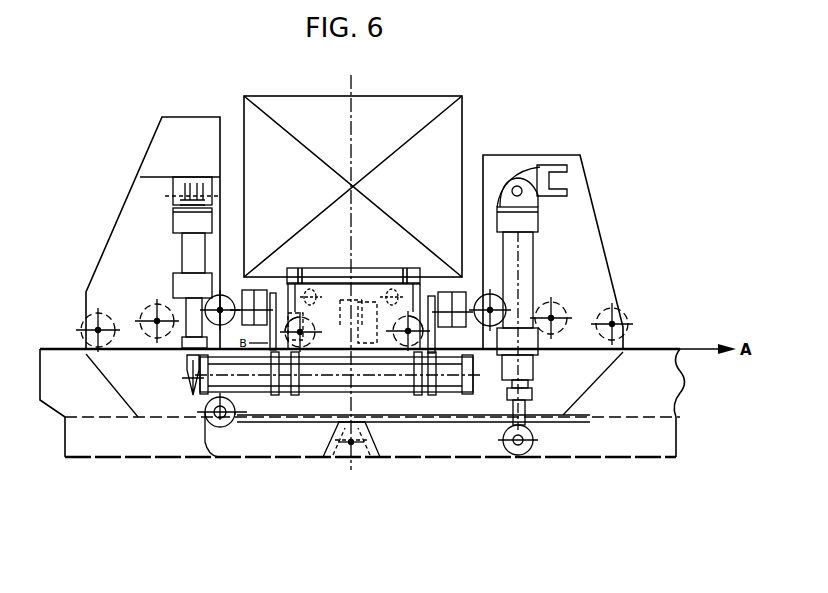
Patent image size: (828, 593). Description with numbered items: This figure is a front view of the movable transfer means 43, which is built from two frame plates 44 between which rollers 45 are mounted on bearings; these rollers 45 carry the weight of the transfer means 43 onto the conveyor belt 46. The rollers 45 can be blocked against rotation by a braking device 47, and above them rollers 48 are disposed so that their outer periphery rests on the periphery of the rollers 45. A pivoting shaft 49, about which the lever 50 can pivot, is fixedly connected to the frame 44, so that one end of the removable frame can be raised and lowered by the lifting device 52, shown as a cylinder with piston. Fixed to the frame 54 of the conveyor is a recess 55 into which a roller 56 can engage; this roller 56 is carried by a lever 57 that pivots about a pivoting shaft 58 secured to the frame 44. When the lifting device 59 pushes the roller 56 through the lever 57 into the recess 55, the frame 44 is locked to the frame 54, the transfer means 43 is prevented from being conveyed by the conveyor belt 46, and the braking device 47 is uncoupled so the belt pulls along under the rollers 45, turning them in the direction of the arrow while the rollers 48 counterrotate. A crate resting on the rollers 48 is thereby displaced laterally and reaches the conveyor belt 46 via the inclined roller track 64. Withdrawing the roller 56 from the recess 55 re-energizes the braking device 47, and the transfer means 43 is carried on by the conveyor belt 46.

The movable transfer means 43 is at (610, 199).
The frame plates 44 is at (196, 140).
The rollers 45 is at (291, 284).
The conveyor belt 46 is at (657, 349).
The braking device 47 is at (352, 292).
The rollers 48 is at (389, 292).
The pivoting shaft 49 is at (452, 368).
The lever 50 is at (296, 393).
The lifting device 52 is at (190, 261).
The frame 54 is at (637, 383).
The recess 55 is at (392, 456).
The roller 56 is at (343, 446).
The lever 57 is at (473, 427).
The pivoting shaft 58 is at (223, 417).
The lifting device 59 is at (522, 260).
The inclined roller track 64 is at (613, 323).